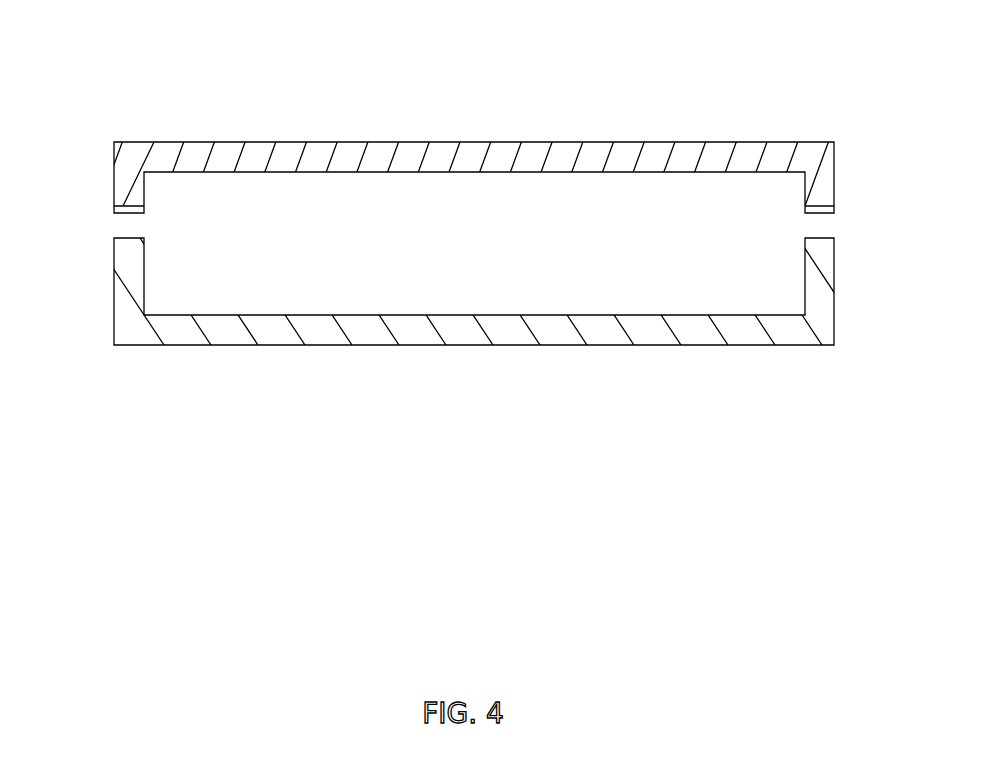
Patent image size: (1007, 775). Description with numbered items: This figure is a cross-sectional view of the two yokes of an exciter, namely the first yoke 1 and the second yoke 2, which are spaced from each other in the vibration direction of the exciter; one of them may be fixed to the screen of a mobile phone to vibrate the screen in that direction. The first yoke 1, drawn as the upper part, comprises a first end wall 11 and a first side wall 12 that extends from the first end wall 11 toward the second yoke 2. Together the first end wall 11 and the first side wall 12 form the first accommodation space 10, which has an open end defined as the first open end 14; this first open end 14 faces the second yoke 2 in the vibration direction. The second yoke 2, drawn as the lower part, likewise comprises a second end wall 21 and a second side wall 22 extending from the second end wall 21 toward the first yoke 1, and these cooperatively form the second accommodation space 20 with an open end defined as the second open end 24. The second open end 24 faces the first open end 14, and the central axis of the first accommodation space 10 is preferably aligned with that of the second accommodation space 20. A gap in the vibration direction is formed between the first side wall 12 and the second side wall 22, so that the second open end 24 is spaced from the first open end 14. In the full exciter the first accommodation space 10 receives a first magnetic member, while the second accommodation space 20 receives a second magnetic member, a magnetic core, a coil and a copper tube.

The first yoke 1 is at (77, 50).
The first accommodation space 10 is at (497, 185).
The first end wall 11 is at (221, 160).
The first side wall 12 is at (122, 195).
The first open end 14 is at (187, 210).
The second yoke 2 is at (912, 287).
The second accommodation space 20 is at (487, 302).
The second end wall 21 is at (740, 331).
The second side wall 22 is at (812, 278).
The second open end 24 is at (757, 242).